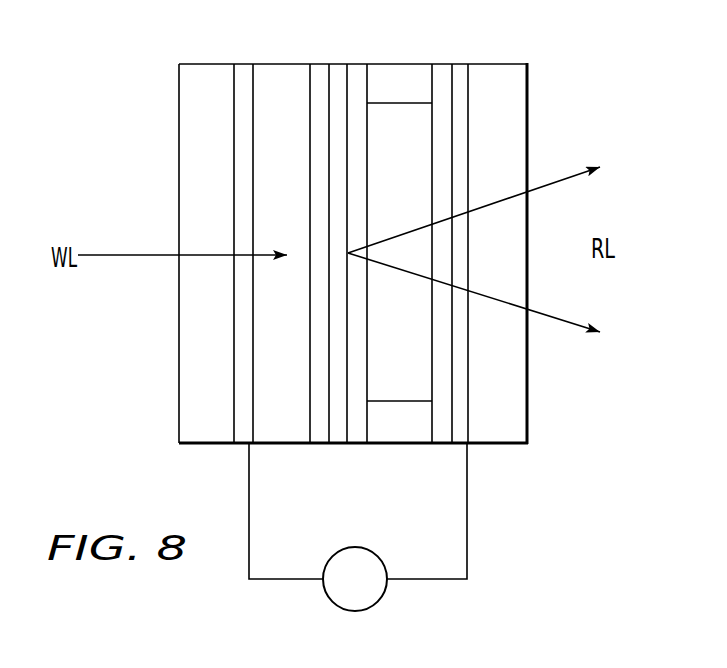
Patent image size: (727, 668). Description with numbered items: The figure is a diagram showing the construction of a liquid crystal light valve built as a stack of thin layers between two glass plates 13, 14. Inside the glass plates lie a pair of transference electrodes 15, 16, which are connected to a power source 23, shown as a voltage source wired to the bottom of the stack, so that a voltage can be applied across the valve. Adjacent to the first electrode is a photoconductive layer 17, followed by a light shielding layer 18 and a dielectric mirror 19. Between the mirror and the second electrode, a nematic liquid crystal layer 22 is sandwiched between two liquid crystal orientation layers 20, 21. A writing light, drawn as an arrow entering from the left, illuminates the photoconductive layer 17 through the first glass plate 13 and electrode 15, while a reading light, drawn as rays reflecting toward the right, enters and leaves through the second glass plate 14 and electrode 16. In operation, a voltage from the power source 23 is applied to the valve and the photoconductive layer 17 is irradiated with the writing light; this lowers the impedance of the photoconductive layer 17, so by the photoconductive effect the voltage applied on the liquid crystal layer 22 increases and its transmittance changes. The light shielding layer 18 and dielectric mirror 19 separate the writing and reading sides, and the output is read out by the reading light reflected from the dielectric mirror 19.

The glass plate 13 is at (200, 68).
The glass plate 14 is at (504, 67).
The transference electrode 15 is at (242, 68).
The transference electrode 16 is at (458, 67).
The photoconductive layer 17 is at (282, 67).
The light shielding layer 18 is at (322, 444).
The dielectric mirror 19 is at (342, 444).
The liquid crystal orientation layer 20 is at (361, 68).
The liquid crystal orientation layer 21 is at (441, 68).
The nematic liquid crystal layer 22 is at (398, 390).
The power source 23 is at (372, 594).